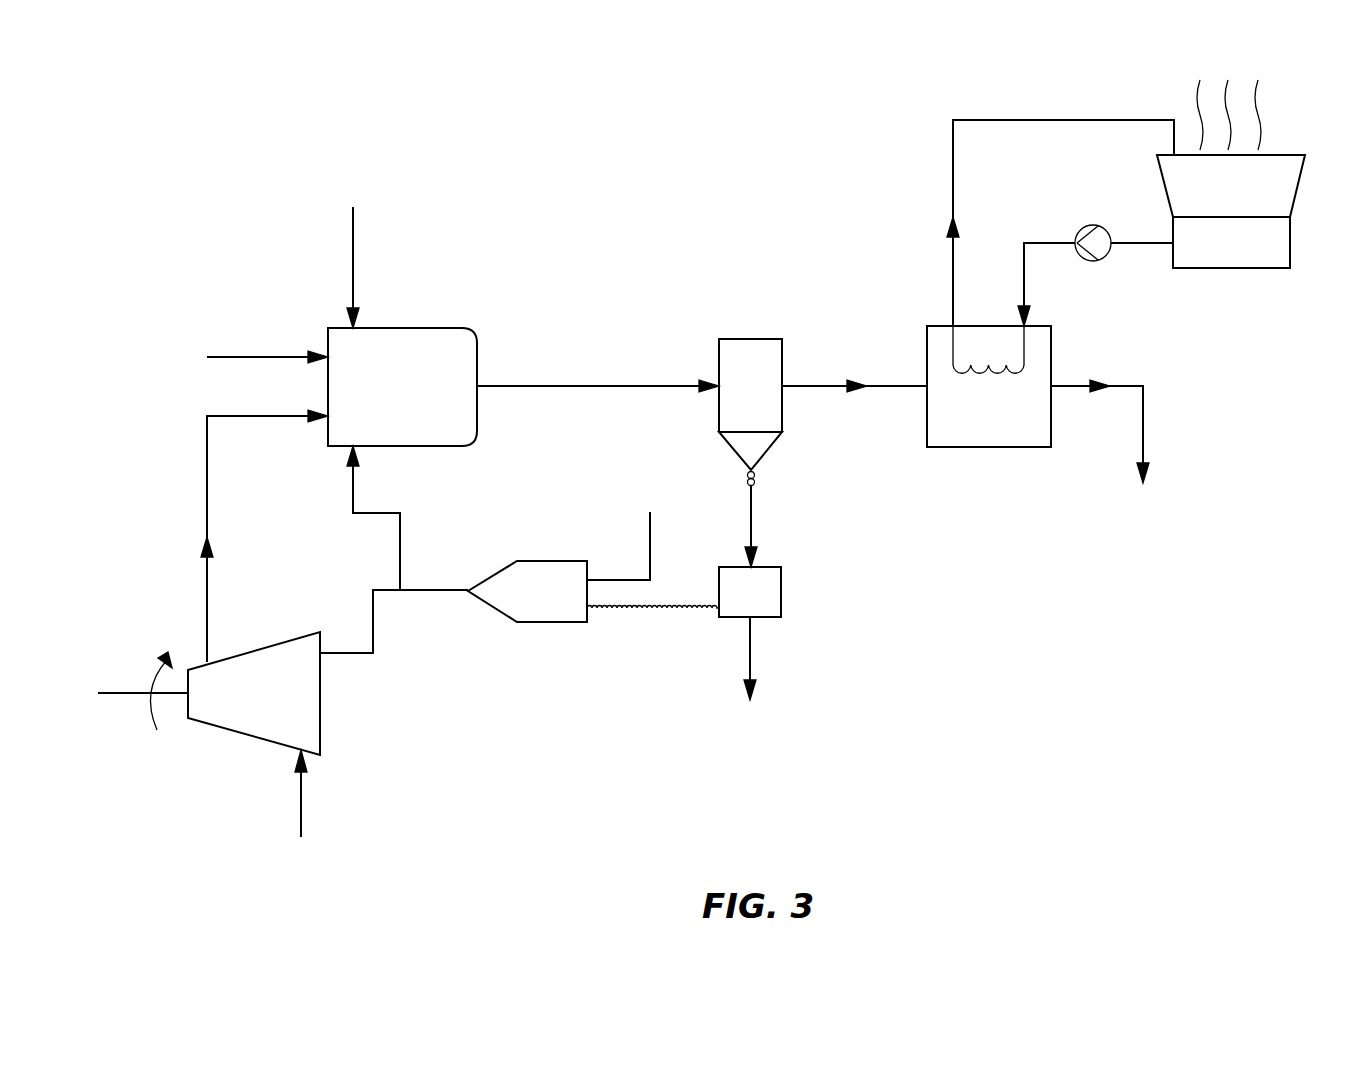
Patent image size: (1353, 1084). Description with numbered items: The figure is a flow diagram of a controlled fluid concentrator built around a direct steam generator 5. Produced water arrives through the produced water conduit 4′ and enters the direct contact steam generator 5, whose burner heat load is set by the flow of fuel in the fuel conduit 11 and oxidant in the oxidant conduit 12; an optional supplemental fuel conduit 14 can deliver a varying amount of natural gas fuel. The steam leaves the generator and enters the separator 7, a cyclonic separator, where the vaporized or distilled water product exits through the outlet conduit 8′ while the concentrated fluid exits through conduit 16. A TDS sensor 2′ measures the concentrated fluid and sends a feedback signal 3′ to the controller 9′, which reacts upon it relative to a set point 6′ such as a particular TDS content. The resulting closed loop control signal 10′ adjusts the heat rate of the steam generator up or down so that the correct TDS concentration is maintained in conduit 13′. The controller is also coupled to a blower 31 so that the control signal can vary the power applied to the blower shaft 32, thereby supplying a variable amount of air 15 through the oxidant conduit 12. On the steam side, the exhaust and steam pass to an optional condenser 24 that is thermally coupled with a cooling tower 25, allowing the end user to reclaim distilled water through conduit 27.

The produced water conduit 4′ is at (353, 243).
The direct steam generator 5 is at (420, 328).
The fuel conduit 11 is at (259, 355).
The oxidant conduit 12 is at (207, 470).
The supplemental fuel conduit 14 is at (353, 492).
The control signal 10′ is at (437, 590).
The blower shaft 32 is at (117, 693).
The blower 31 is at (320, 697).
The air 15 is at (301, 806).
The separator 7 is at (782, 358).
The outlet conduit 8′ is at (808, 386).
The concentrated fluid conduit 16 is at (751, 513).
The set point 6′ is at (650, 527).
The controller 9′ is at (547, 622).
The feedback signal 3′ is at (660, 608).
The TDS sensor 2′ is at (781, 592).
The conduit 13′ is at (754, 675).
The condenser 24 is at (988, 447).
The cooling tower 25 is at (1230, 270).
The conduit 27 is at (1143, 425).